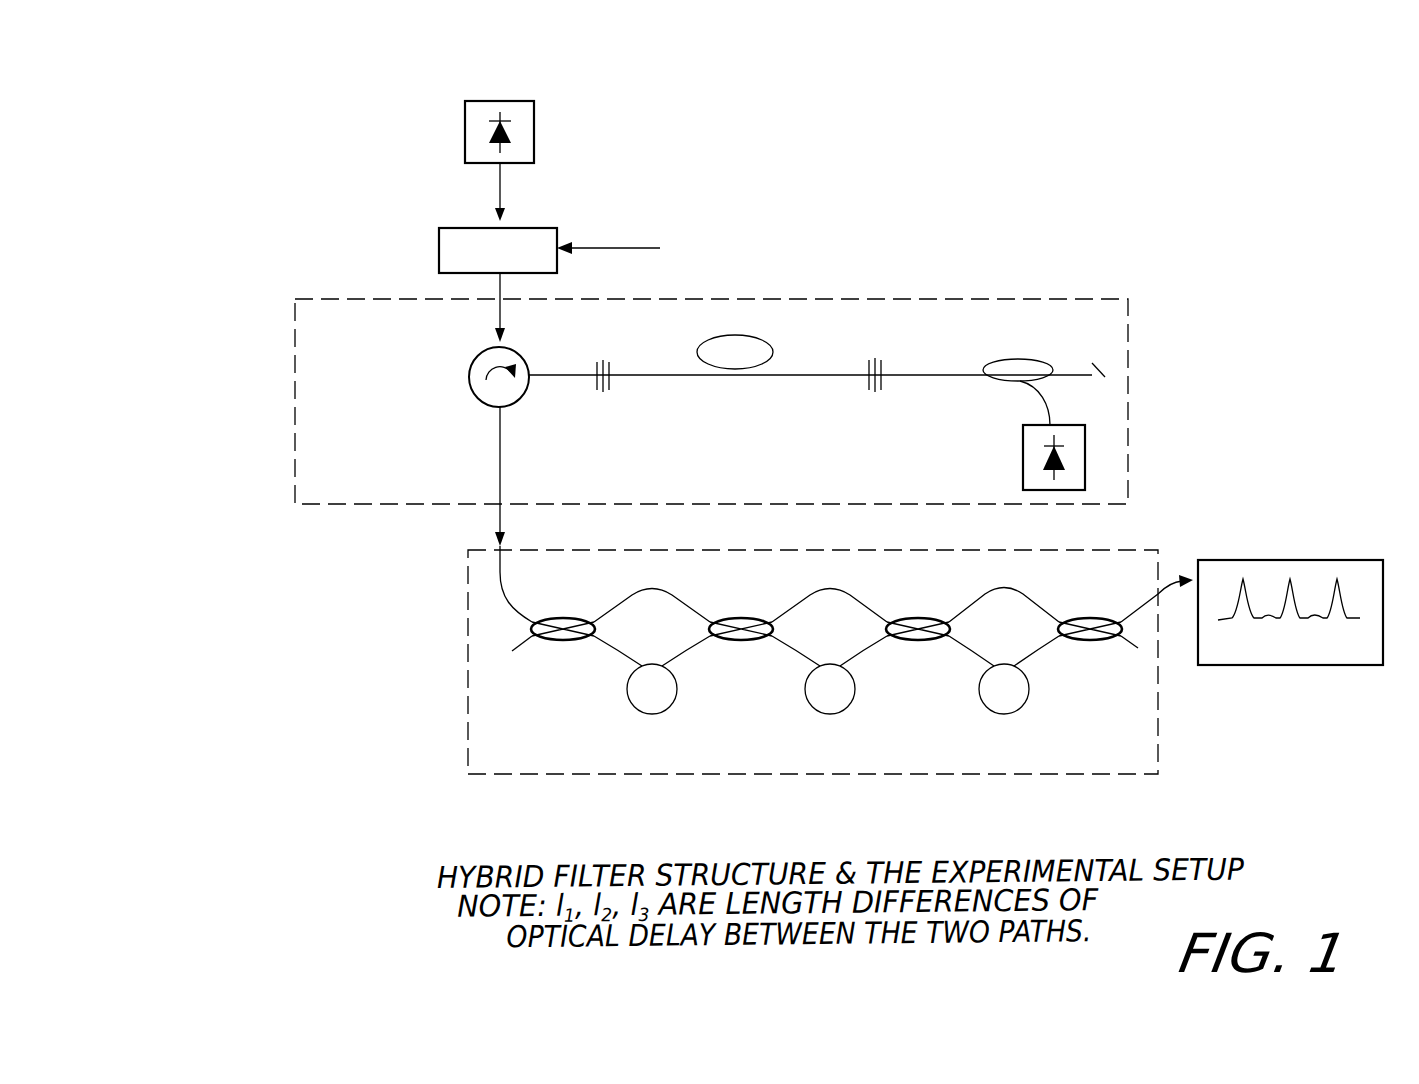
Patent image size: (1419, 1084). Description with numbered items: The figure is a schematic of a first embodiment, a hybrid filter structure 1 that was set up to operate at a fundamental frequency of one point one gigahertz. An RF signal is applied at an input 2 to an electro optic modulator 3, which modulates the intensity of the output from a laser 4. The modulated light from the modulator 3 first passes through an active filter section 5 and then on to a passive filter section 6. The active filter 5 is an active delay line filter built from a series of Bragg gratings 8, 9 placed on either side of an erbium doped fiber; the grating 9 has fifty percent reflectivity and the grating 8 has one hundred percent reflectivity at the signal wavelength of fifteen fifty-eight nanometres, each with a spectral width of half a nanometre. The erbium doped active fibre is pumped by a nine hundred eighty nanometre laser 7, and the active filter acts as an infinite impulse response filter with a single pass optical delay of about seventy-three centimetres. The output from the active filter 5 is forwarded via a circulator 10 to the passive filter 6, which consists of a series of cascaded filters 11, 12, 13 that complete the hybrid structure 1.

The hybrid filter structure 1 is at (1318, 225).
The RF input signal input 2 is at (640, 248).
The electro optic modulator 3 is at (548, 228).
The laser 4 is at (534, 131).
The active filter section 5 is at (1128, 336).
The passive filter section 6 is at (1140, 774).
The 980 nm laser 7 is at (1085, 453).
The 100% reflectivity grating 8 is at (882, 377).
The 50% reflectivity grating 9 is at (600, 385).
The circulator 10 is at (478, 398).
The cascaded filter 11 is at (594, 715).
The cascaded filter 12 is at (806, 715).
The cascaded filter 13 is at (988, 716).